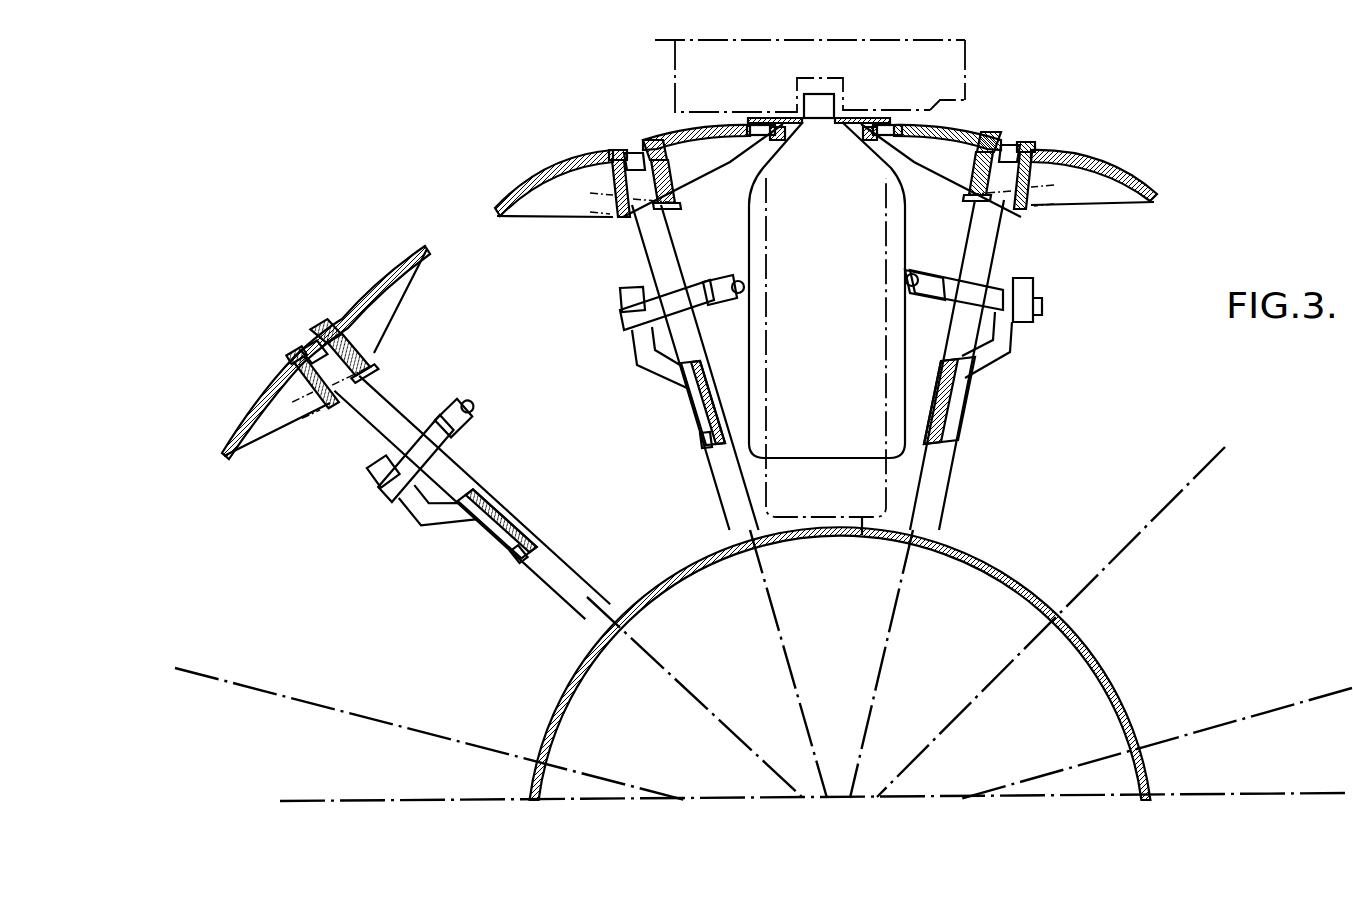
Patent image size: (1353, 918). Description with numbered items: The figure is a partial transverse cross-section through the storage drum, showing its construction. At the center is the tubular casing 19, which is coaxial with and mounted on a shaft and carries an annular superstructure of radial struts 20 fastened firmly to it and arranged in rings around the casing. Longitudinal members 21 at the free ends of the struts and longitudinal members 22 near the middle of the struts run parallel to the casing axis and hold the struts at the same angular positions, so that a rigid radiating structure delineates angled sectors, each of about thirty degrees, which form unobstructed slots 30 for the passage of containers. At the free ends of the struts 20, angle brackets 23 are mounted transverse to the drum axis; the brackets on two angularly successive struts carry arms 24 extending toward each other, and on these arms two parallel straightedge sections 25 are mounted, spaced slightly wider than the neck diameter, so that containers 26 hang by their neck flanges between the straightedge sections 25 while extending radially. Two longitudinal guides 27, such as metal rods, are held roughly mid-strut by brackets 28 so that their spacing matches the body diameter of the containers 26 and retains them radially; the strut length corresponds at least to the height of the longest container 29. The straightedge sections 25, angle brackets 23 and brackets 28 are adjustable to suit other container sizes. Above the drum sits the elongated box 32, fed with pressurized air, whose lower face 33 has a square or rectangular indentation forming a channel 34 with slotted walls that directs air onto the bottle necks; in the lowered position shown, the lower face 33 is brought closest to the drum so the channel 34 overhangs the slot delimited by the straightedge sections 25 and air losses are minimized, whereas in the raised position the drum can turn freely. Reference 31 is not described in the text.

The tubular casing 19 is at (696, 563).
The radial struts 20 is at (730, 495).
The longitudinal members 21 is at (613, 157).
The longitudinal members 22 is at (700, 435).
The angle brackets 23 is at (681, 171).
The arms 24 is at (673, 133).
The straightedge sections 25 is at (766, 118).
The containers 26 is at (906, 245).
The longitudinal guides 27 is at (736, 281).
The brackets 28 is at (657, 313).
The longest container 29 is at (858, 535).
The slots 30 is at (906, 220).
The housing outline 31 is at (673, 70).
The box 32 is at (965, 52).
The lower face 33 is at (963, 98).
The channel 34 is at (836, 94).